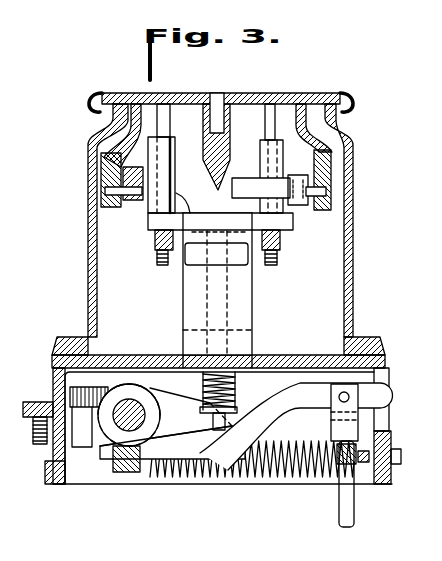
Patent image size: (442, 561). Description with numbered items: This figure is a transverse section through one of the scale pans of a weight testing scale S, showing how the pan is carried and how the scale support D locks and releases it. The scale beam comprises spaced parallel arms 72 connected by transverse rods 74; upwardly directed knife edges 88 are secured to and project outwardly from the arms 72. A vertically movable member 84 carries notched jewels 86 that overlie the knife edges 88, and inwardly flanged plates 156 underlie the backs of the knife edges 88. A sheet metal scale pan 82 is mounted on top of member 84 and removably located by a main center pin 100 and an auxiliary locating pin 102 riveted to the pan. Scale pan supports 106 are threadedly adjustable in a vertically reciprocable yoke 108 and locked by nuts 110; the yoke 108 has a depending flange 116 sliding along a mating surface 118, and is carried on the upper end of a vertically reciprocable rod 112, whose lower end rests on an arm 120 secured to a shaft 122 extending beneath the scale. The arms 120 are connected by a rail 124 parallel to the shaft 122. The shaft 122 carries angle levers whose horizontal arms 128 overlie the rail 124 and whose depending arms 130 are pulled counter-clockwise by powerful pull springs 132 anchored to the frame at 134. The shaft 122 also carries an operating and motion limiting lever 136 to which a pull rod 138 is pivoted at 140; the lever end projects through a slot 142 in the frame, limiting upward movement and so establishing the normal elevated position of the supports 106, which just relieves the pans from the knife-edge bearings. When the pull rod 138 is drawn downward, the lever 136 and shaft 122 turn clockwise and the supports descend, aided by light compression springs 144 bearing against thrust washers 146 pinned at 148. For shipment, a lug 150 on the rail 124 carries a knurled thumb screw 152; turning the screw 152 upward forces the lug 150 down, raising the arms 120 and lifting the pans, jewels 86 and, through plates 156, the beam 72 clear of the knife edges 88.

The scale pan 82 is at (101, 95).
The auxiliary locating pin 102 is at (137, 93).
The scale pan support 106 is at (199, 84).
The main center pin 100 is at (250, 84).
The weight testing scale S is at (286, 85).
The transverse rod 74 is at (245, 178).
The vertically movable member 84 is at (211, 158).
The notched jewel 86 is at (102, 180).
The inwardly flanged plate 156 is at (104, 192).
The knife edge 88 is at (129, 208).
The scale beam arm 72 is at (132, 208).
The scale support D is at (140, 238).
The lock nut 110 is at (151, 246).
The yoke 108 is at (184, 248).
The depending flange 116 is at (197, 265).
The mating surface 118 is at (245, 278).
The vertically reciprocable rod 112 is at (254, 330).
The pivot 140 is at (362, 355).
The compression spring 144 is at (180, 357).
The horizontal arm 128 is at (53, 375).
The thrust washer 146 is at (204, 395).
The operating and motion limiting lever 136 is at (275, 399).
The pin 148 is at (238, 412).
The slot 142 is at (389, 421).
The knurled thumb screw 152 is at (40, 420).
The lug 150 is at (50, 474).
The rail 124 is at (76, 448).
The shaft 122 is at (125, 432).
The vertically depending arm 130 is at (131, 473).
The arm 120 is at (226, 460).
The pull spring 132 is at (288, 481).
The pull rod 138 is at (340, 508).
The spring anchor 134 is at (399, 464).